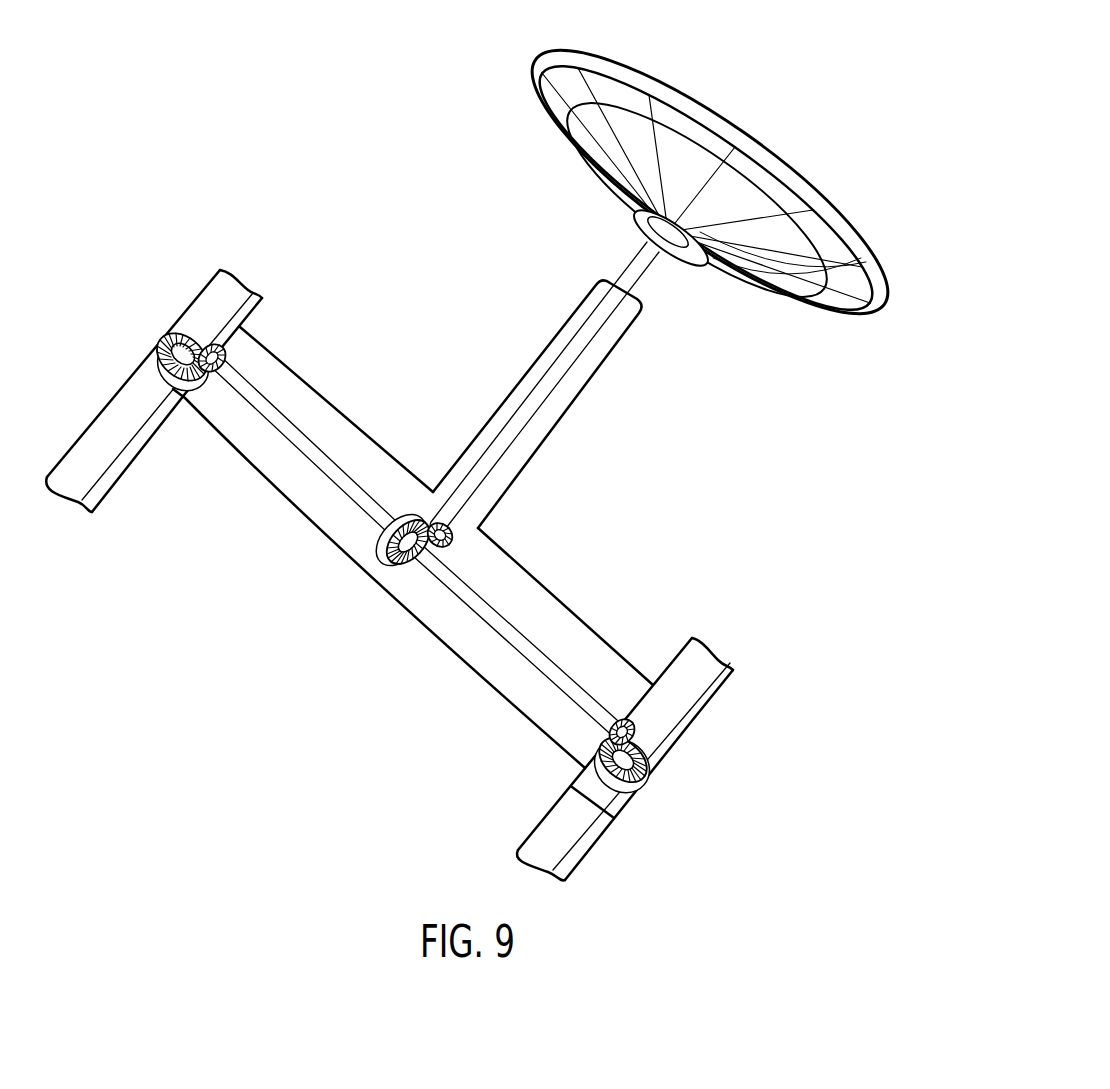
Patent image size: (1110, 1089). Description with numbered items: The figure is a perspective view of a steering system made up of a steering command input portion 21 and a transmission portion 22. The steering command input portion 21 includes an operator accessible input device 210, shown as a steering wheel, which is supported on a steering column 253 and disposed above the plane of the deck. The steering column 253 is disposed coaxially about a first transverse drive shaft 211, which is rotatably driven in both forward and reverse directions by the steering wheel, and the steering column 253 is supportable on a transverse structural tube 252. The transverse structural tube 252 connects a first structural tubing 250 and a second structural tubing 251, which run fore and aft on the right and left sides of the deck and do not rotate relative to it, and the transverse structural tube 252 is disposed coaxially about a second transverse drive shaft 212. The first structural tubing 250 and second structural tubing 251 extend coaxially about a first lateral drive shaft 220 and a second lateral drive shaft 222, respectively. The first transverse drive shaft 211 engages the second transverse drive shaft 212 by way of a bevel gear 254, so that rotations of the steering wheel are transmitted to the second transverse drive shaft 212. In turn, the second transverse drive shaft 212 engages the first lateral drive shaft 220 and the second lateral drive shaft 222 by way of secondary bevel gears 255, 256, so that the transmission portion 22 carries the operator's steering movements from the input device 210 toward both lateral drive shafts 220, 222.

The steering command input portion 21 is at (710, 181).
The operator accessible input device 210 is at (703, 82).
The transmission portion 22 is at (411, 568).
The first transverse drive shaft 211 is at (604, 338).
The second transverse drive shaft 212 is at (352, 479).
The first lateral drive shaft 220 is at (197, 316).
The second lateral drive shaft 222 is at (707, 688).
The first structural tubing 250 is at (121, 484).
The second structural tubing 251 is at (580, 866).
The transverse structural tube 252 is at (568, 613).
The steering column 253 is at (583, 397).
The bevel gear 254 is at (457, 553).
The secondary bevel gear 255 is at (226, 336).
The secondary bevel gear 256 is at (642, 737).